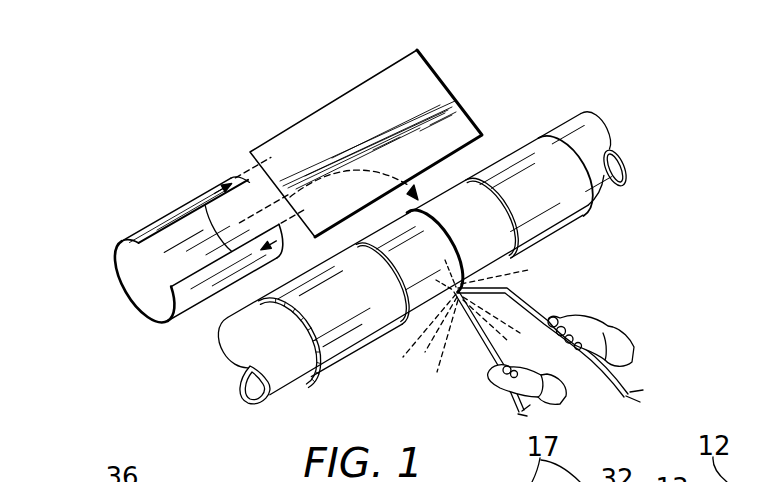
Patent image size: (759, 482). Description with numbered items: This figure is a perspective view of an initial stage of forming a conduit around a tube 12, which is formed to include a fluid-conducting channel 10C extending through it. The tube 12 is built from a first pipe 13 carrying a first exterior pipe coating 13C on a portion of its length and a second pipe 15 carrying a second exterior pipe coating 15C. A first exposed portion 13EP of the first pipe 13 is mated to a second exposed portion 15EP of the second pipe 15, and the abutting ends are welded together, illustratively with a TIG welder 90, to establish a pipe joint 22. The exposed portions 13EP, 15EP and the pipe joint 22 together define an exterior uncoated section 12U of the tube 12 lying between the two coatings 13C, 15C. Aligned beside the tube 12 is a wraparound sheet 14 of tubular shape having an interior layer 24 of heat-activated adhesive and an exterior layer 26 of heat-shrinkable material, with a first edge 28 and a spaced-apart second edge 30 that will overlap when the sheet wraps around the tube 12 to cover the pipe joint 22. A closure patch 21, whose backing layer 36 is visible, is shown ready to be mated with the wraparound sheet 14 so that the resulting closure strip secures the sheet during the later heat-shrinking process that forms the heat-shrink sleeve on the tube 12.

The fluid-conducting channel 10C is at (632, 167).
The tube 12 is at (602, 109).
The exterior uncoated section 12U is at (418, 262).
The first pipe 13 is at (336, 345).
The first exterior pipe coating 13C is at (348, 338).
The first exposed portion 13EP is at (452, 302).
The wraparound sheet 14 is at (112, 280).
The second pipe 15 is at (595, 209).
The second exterior pipe coating 15C is at (517, 163).
The second exposed portion 15EP is at (503, 221).
The closure patch 21 is at (394, 102).
The pipe joint 22 is at (441, 230).
The interior layer 24 is at (165, 311).
The exterior layer 26 is at (172, 224).
The first edge 28 is at (203, 276).
The second edge 30 is at (199, 203).
The backing layer 36 is at (425, 82).
The TIG welder 90 is at (617, 333).